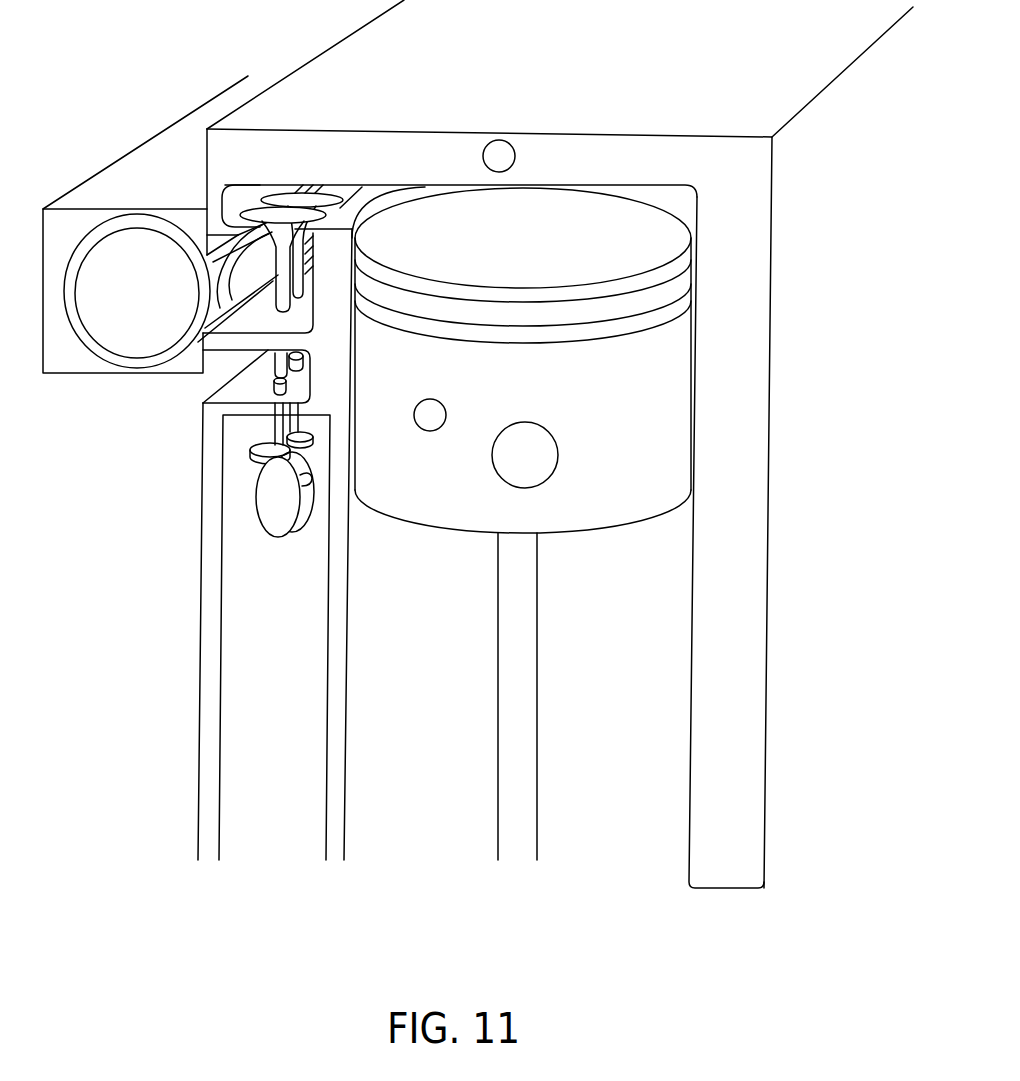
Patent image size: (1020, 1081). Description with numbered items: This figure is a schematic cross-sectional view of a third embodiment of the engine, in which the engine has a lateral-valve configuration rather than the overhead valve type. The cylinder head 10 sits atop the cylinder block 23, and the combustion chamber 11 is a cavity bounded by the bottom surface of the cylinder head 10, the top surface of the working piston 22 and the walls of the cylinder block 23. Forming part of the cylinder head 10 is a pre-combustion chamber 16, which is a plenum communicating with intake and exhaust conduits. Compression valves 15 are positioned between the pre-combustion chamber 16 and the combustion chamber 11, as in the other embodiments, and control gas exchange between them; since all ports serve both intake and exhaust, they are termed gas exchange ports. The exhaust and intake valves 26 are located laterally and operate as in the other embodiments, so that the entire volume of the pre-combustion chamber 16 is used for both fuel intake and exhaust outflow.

The cylinder head 10 is at (656, 158).
The combustion chamber 11 is at (665, 207).
The compression valve 15 is at (283, 193).
The pre-combustion chamber 16 is at (250, 317).
The working piston 22 is at (661, 473).
The cylinder block 23 is at (748, 406).
The exhaust and intake valves 26 is at (126, 318).